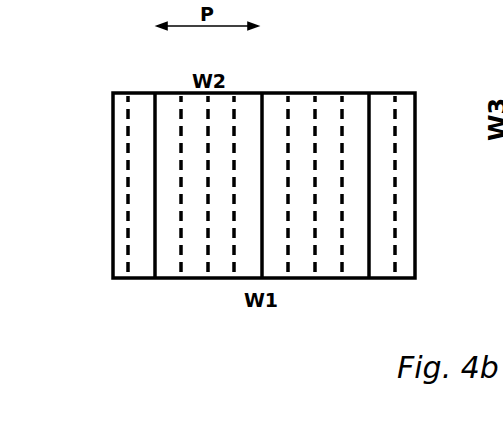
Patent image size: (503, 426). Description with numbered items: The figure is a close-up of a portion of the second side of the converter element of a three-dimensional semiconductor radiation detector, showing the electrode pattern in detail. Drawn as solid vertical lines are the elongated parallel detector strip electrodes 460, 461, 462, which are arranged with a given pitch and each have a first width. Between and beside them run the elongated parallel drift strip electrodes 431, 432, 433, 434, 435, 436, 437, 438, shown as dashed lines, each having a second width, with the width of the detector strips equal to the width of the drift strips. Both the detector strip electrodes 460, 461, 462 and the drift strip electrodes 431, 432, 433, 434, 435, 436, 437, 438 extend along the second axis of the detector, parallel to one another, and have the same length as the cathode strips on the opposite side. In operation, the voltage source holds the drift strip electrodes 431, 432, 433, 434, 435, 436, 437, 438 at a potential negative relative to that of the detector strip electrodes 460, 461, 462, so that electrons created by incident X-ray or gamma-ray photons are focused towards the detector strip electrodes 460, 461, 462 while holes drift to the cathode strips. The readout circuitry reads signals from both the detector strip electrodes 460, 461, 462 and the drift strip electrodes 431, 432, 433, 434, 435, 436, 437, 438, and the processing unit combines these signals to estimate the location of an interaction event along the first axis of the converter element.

The drift strip electrode 431 is at (95, 206).
The drift strip electrode 432 is at (134, 221).
The drift strip electrode 433 is at (173, 235).
The drift strip electrode 434 is at (199, 245).
The drift strip electrode 435 is at (267, 227).
The drift strip electrode 436 is at (286, 239).
The drift strip electrode 437 is at (310, 249).
The drift strip electrode 438 is at (430, 206).
The detector strip electrode 460 is at (125, 157).
The detector strip electrode 461 is at (226, 157).
The detector strip electrode 462 is at (336, 158).